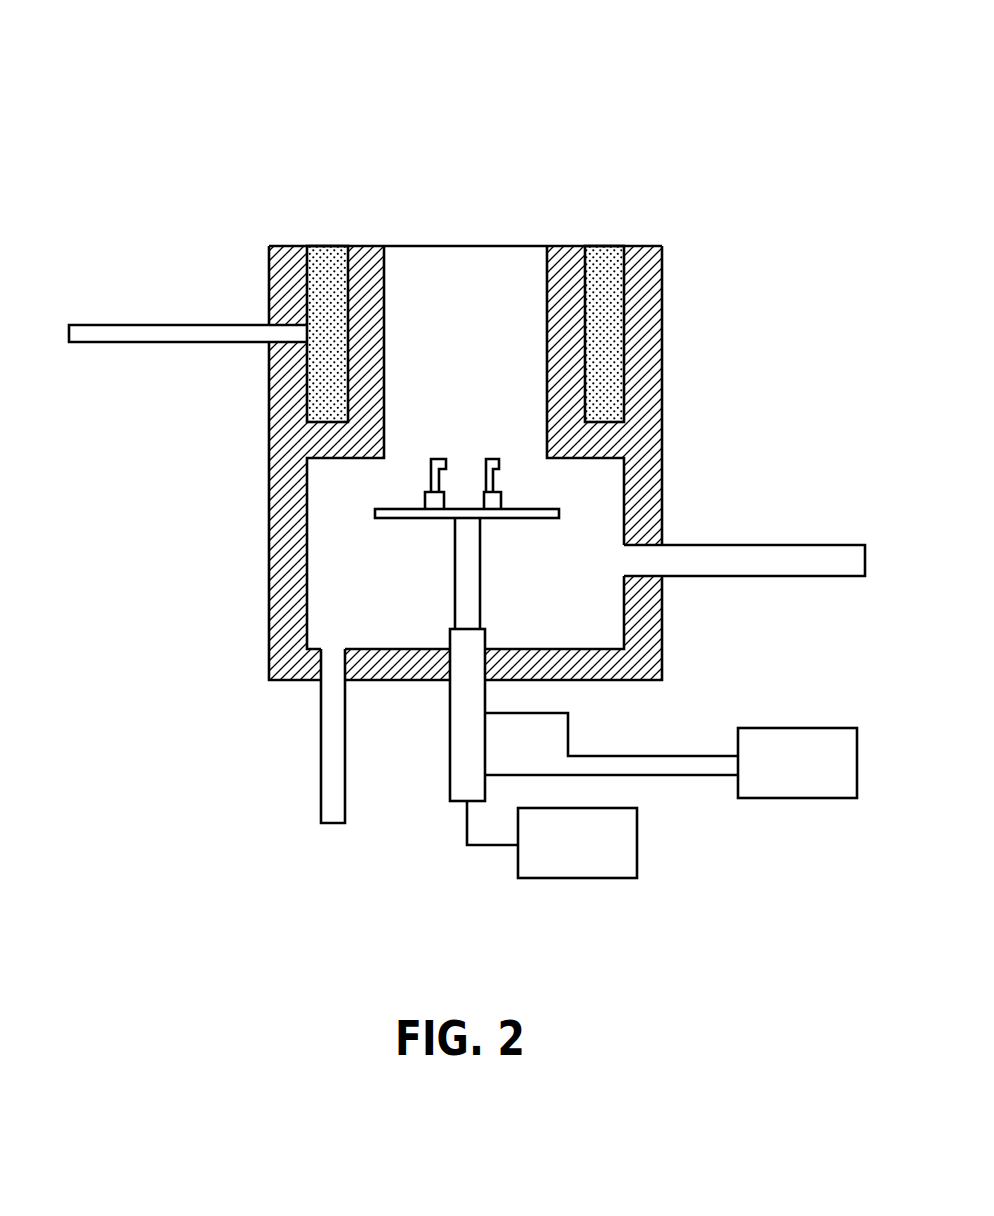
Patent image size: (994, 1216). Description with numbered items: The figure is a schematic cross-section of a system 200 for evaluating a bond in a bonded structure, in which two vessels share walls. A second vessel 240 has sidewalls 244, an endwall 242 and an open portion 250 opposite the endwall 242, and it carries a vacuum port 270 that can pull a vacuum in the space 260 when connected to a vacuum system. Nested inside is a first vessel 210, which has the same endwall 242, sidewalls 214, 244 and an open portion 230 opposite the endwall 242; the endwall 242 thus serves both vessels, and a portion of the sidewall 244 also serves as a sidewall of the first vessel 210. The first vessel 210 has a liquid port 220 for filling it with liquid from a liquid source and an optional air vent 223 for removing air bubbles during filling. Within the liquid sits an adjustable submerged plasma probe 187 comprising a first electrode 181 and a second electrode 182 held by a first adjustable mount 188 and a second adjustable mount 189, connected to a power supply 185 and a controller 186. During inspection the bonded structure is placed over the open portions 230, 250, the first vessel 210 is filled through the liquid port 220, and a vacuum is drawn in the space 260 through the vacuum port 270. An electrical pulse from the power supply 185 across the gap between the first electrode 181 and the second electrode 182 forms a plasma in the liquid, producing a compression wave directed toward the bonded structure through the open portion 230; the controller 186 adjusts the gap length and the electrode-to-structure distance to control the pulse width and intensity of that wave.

The system 200 is at (471, 98).
The first vessel 210 is at (566, 246).
The sidewall 214 is at (545, 383).
The liquid port 220 is at (808, 552).
The air vent 223 is at (320, 802).
The open portion 230 is at (433, 246).
The second vessel 240 is at (647, 246).
The endwall 242 is at (360, 648).
The sidewall 244 is at (268, 562).
The open portion 250 is at (322, 246).
The space 260 is at (322, 305).
The vacuum port 270 is at (125, 323).
The first electrode 181 is at (427, 480).
The second electrode 182 is at (502, 479).
The power supply 185 is at (671, 755).
The controller 186 is at (552, 839).
The adjustable submerged plasma probe 187 is at (449, 806).
The first adjustable mount 188 is at (528, 522).
The second adjustable mount 189 is at (488, 622).